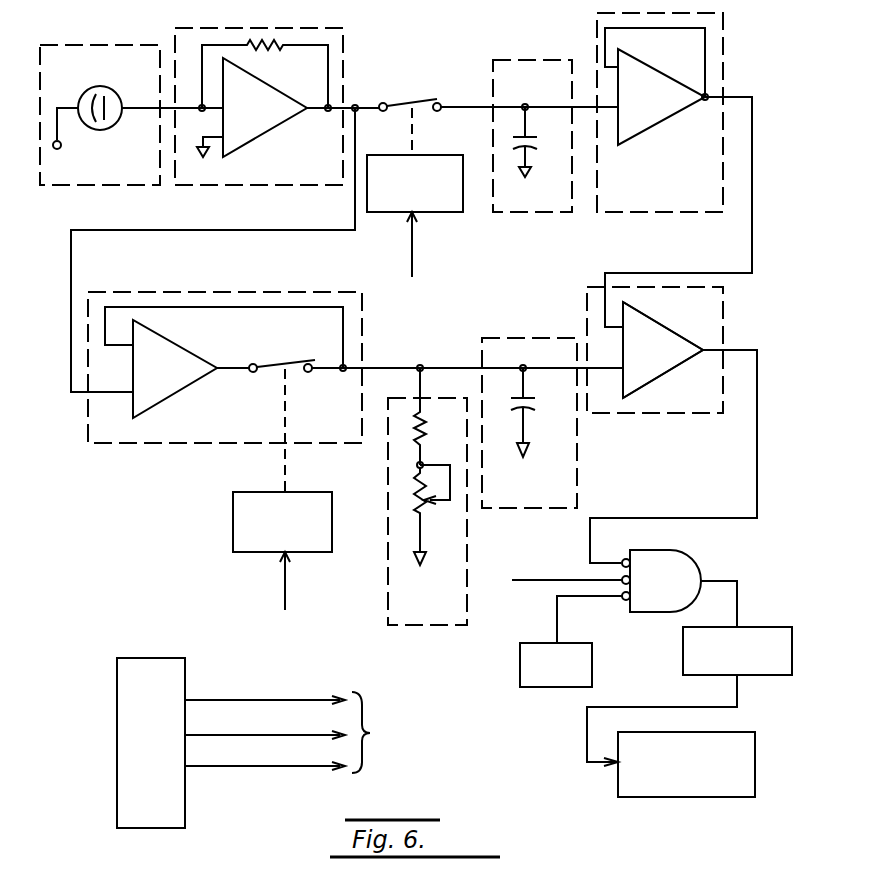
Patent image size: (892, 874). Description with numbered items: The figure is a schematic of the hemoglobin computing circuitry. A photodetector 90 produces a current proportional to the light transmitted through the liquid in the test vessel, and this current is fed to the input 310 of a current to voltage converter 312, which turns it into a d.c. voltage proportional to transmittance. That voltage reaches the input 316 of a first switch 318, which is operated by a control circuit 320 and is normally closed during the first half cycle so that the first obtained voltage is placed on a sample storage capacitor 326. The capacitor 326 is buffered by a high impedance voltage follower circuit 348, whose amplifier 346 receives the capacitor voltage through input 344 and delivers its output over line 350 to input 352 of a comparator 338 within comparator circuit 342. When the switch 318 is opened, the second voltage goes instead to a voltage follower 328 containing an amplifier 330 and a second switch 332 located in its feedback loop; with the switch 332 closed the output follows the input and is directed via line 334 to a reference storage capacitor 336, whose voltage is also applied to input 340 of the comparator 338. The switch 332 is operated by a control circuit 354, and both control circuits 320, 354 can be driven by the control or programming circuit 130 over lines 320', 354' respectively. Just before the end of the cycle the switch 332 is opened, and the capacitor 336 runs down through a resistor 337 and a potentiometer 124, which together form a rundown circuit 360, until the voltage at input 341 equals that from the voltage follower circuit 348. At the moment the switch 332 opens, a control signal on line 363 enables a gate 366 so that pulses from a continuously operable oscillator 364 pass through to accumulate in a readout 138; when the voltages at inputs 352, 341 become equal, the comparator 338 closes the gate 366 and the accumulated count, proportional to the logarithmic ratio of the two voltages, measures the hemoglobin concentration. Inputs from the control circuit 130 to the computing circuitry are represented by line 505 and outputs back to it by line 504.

The photodetector 90 is at (80, 185).
The input of current to voltage converter 310 is at (215, 110).
The current to voltage converter 312 is at (222, 185).
The input of first switch 316 is at (381, 103).
The first switch 318 is at (412, 103).
The control circuit 320 is at (430, 207).
The line 320' is at (301, 458).
The sample storage capacitor 326 is at (532, 60).
The voltage follower 328 is at (198, 443).
The amplifier 330 is at (160, 335).
The second switch 332 is at (277, 372).
The line 334 is at (393, 365).
The reference storage capacitor 336 is at (537, 338).
The resistor 337 is at (425, 427).
The potentiometer 124 is at (452, 490).
The comparator 338 is at (657, 318).
The input of comparator 340 is at (625, 373).
The input of comparator 341 is at (657, 395).
The comparator circuit 342 is at (667, 413).
The input 344 is at (613, 110).
The amplifier 346 is at (677, 77).
The voltage follower circuit 348 is at (642, 212).
The line 350 is at (600, 298).
The input of comparator 352 is at (622, 330).
The control circuit 354 is at (240, 522).
The line 354' is at (265, 679).
The rundown circuit 360 is at (450, 625).
The line 363 is at (552, 578).
The oscillator 364 is at (527, 687).
The gate 366 is at (693, 560).
The line 504 is at (723, 578).
The control or programming circuit 130 is at (685, 665).
The readout 138 is at (743, 732).
The line 505 is at (387, 732).